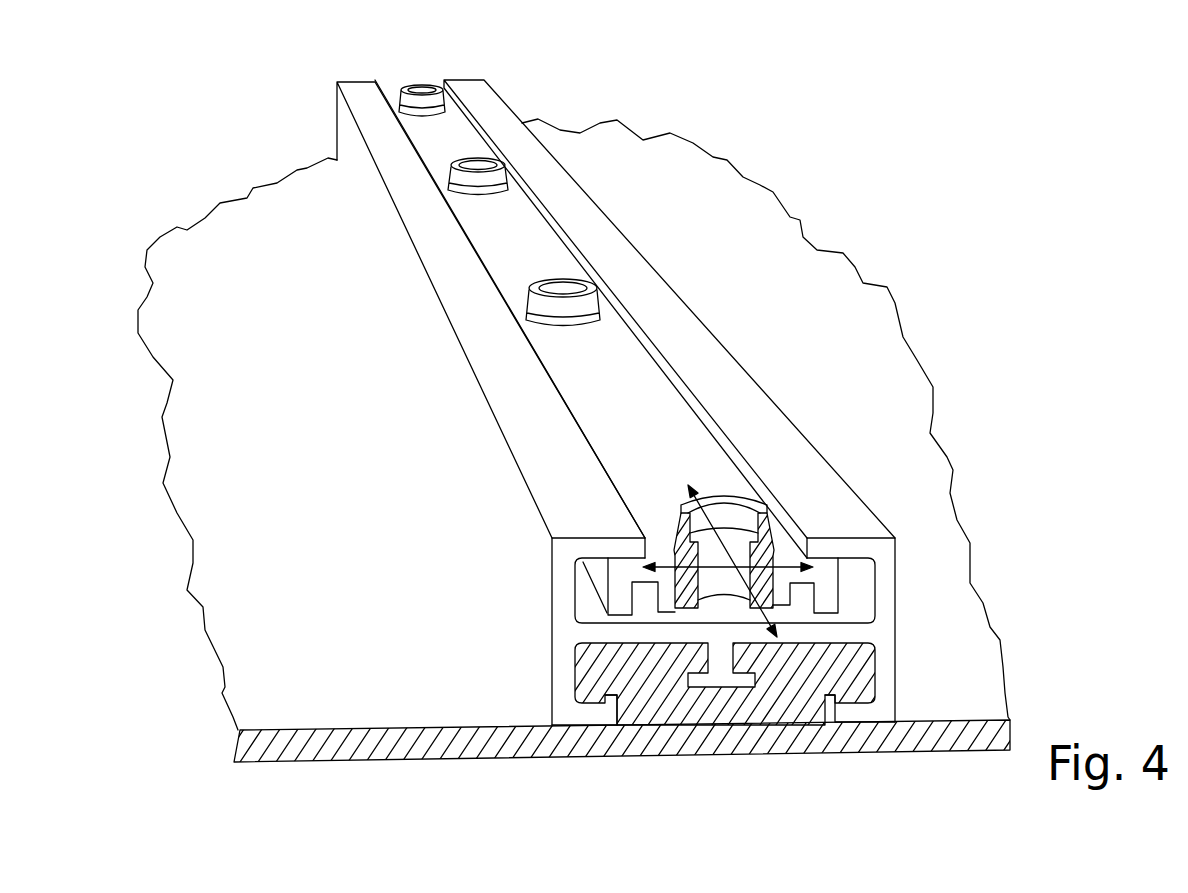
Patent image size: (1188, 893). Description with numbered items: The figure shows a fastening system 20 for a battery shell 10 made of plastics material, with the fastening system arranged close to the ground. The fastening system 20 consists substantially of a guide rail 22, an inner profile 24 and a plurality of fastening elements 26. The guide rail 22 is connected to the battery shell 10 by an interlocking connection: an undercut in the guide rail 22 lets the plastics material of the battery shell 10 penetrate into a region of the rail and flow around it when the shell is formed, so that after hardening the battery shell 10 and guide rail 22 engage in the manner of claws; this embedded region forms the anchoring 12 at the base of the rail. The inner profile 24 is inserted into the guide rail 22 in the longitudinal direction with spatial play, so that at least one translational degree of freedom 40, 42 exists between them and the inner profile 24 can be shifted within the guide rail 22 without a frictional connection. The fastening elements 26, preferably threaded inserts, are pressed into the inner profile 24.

The battery shell 10 is at (347, 529).
The anchoring 12 is at (664, 687).
The fastening system 20 is at (457, 126).
The guide rail 22 is at (730, 385).
The inner profile 24 is at (645, 410).
The fastening element 26 is at (401, 89).
The translational degree of freedom 40 is at (747, 500).
The translational degree of freedom 42 is at (713, 570).